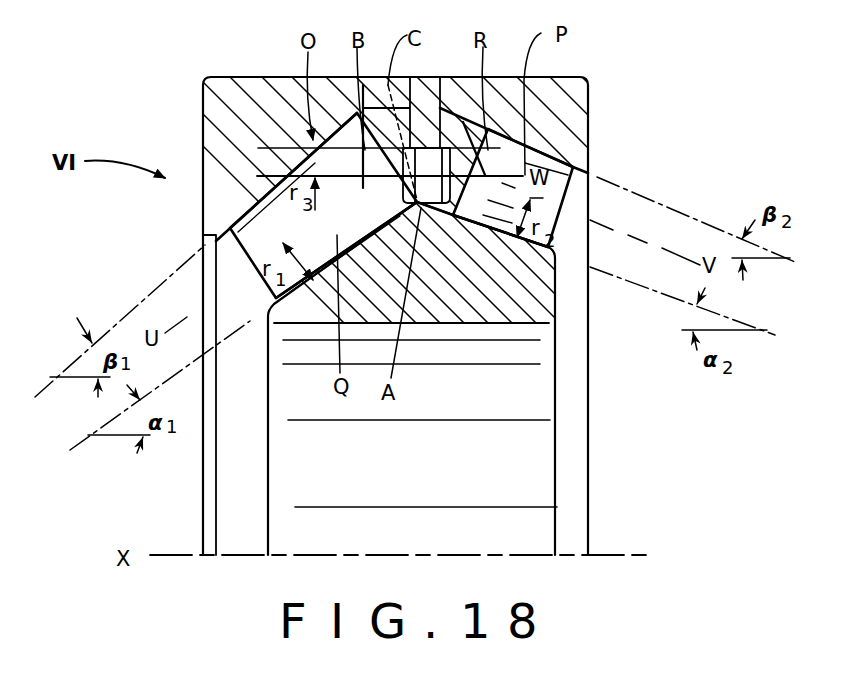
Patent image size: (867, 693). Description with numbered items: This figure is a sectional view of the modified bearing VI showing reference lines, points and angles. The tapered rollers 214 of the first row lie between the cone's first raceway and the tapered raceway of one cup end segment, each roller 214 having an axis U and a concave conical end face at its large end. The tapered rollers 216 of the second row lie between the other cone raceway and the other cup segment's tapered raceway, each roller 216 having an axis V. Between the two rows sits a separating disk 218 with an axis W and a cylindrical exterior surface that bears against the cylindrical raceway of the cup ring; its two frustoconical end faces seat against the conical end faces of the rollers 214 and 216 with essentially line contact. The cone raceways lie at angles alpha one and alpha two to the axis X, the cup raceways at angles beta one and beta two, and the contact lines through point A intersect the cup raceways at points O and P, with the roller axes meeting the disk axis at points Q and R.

The tapered roller 214 is at (262, 209).
The tapered roller 216 is at (545, 135).
The separating disk 218 is at (452, 255).